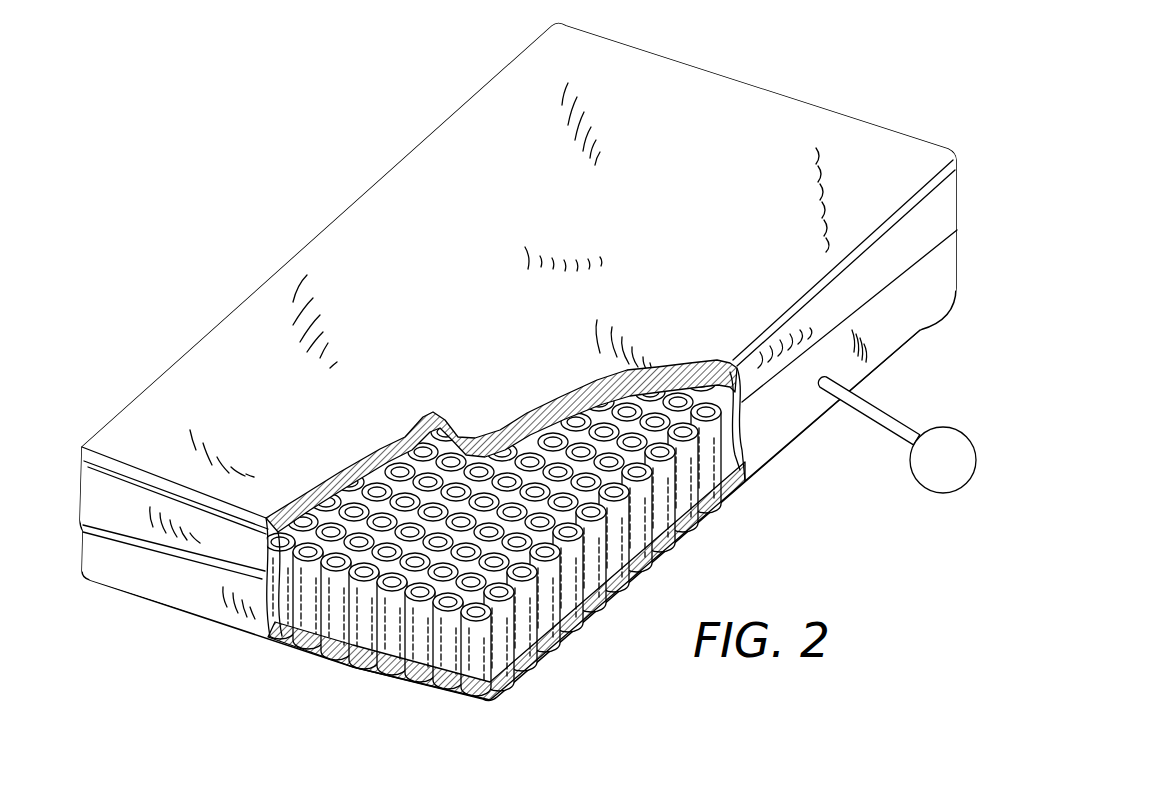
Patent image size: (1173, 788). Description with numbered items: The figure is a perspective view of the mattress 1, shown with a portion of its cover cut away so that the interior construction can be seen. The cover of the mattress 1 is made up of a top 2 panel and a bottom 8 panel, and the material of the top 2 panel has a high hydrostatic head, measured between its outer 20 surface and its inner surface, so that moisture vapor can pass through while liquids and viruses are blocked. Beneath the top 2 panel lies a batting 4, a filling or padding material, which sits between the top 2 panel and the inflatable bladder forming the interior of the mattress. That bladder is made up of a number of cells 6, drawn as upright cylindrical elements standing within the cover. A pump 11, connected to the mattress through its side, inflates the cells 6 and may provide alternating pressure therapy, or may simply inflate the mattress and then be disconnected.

The mattress 1 is at (518, 362).
The top panel 2 is at (260, 338).
The outer surface 20 is at (403, 288).
The batting 4 is at (273, 587).
The cells 6 is at (488, 636).
The bottom panel 8 is at (777, 427).
The pump 11 is at (963, 432).